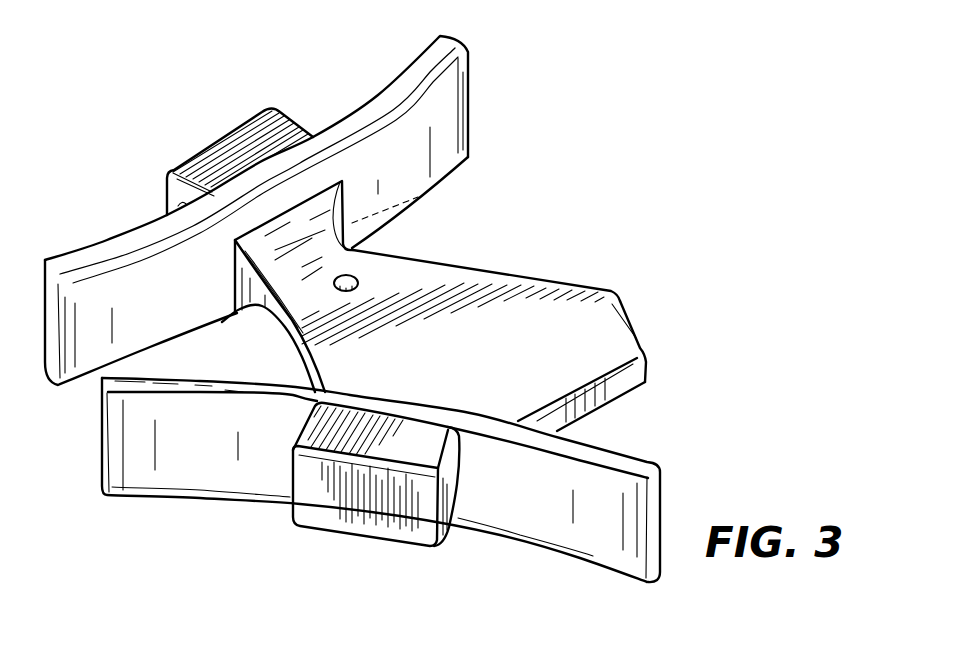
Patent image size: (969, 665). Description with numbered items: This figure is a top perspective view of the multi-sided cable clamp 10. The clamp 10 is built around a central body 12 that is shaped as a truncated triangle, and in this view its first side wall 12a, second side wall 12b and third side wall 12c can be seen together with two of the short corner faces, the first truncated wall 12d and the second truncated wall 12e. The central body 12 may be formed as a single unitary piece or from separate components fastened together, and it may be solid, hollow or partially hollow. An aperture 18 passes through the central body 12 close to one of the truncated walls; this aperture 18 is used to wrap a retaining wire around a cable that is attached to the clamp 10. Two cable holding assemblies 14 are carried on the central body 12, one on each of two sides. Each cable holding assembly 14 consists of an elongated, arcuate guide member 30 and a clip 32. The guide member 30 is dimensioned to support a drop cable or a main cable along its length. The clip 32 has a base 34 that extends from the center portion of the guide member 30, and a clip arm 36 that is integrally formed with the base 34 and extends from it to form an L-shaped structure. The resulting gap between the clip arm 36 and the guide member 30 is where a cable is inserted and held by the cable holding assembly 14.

The clamp 10 is at (752, 295).
The central body 12 is at (545, 275).
The first side wall 12a is at (600, 408).
The second side wall 12b is at (490, 266).
The third side wall 12c is at (280, 340).
The first truncated wall 12d is at (636, 325).
The second truncated wall 12e is at (430, 200).
The cable holding assembly 14 is at (248, 89).
The aperture 18 is at (352, 283).
The guide member 30 is at (79, 245).
The clip 32 is at (175, 162).
The base 34 is at (271, 145).
The clip arm 36 is at (333, 505).